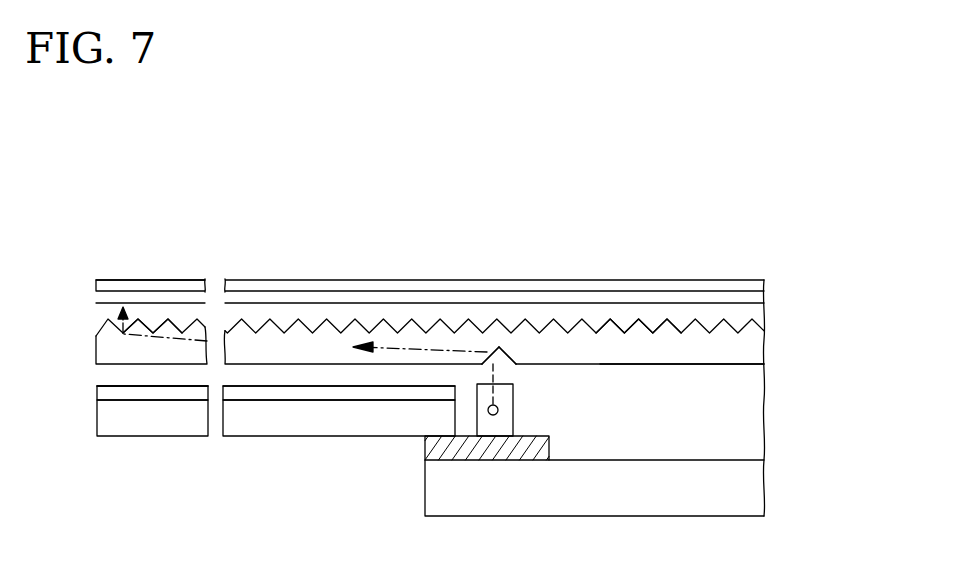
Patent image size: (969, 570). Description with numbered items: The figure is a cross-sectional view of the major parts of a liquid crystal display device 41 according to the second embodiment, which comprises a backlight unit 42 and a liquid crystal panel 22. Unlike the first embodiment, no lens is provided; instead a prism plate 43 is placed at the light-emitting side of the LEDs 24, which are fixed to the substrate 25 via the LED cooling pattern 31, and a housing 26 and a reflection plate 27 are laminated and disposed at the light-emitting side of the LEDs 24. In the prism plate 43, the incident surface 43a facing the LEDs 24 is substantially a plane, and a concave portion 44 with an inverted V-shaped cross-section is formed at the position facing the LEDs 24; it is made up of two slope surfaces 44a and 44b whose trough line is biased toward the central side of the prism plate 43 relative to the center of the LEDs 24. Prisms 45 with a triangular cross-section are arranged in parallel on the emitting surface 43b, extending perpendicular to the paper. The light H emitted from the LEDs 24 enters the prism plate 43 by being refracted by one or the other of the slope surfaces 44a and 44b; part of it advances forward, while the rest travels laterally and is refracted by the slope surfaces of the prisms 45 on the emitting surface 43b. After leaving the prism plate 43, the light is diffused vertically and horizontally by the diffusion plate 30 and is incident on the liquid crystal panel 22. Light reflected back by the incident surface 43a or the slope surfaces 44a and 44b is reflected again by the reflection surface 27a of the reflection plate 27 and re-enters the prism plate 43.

The liquid crystal display device 41 is at (99, 247).
The liquid crystal panel 22 is at (727, 279).
The diffusion plate 30 is at (735, 301).
The prism plate 43 is at (735, 351).
The incident surface 43a is at (676, 366).
The emitting surface 43b is at (648, 322).
The concave portion 44 is at (567, 205).
The slope surface 44a is at (492, 353).
The slope surface 44b is at (506, 353).
The prisms 45 is at (170, 327).
The backlight unit 42 is at (830, 283).
The reflection plate 27 is at (147, 392).
The reflection surface 27a is at (187, 386).
The housing 26 is at (118, 415).
The LED 24 is at (516, 410).
The light H is at (497, 396).
The LED cooling pattern 31 is at (435, 447).
The substrate 25 is at (735, 485).